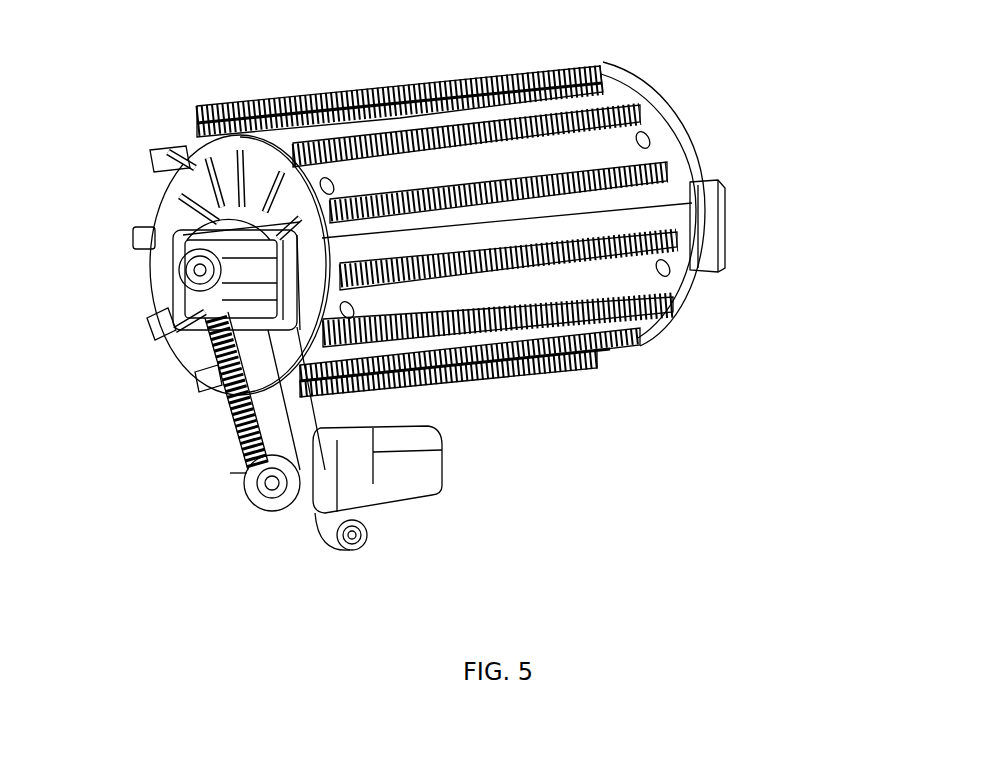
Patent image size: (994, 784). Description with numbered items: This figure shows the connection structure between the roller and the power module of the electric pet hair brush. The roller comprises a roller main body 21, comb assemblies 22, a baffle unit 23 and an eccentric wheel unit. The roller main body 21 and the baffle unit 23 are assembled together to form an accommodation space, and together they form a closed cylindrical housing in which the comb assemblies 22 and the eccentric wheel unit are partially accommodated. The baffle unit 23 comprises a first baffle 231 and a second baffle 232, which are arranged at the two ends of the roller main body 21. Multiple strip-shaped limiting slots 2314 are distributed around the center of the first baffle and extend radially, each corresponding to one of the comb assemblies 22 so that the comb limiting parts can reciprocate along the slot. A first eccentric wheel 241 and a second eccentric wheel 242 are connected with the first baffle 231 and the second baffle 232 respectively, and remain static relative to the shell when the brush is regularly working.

The roller main body 21 is at (650, 143).
The comb assemblies 22 is at (250, 106).
The baffle unit 23 is at (387, 477).
The first baffle 231 is at (335, 240).
The second baffle 232 is at (643, 320).
The limiting slots 2314 is at (240, 195).
The first eccentric wheel 241 is at (197, 268).
The second eccentric wheel 242 is at (722, 212).